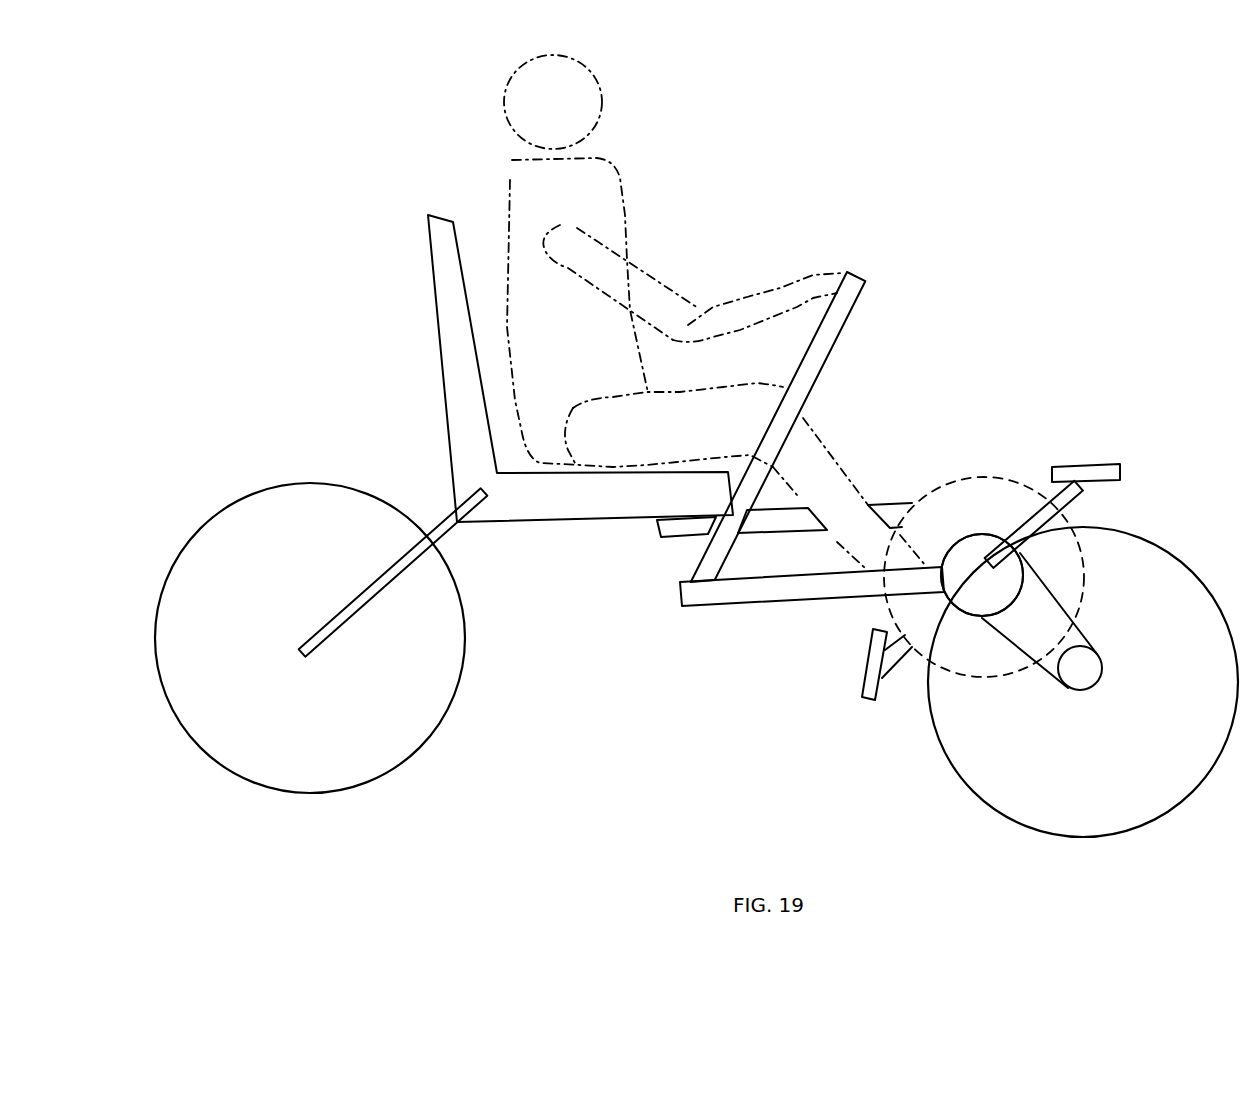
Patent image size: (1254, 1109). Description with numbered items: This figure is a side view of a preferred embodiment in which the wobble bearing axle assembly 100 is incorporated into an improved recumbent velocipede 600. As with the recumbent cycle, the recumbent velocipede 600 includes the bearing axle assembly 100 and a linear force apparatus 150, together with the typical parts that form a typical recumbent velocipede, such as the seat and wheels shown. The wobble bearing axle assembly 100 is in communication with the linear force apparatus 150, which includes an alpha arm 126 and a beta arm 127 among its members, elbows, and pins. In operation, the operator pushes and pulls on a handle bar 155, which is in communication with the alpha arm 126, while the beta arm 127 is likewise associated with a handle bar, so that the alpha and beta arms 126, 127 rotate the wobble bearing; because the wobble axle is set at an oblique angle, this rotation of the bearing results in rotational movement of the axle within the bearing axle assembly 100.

The recumbent velocipede 600 is at (200, 124).
The handle bar 155 is at (833, 350).
The linear force apparatus 150 is at (678, 588).
The beta arm 127 is at (793, 515).
The alpha arm 126 is at (848, 572).
The wobble bearing axle assembly 100 is at (1020, 555).